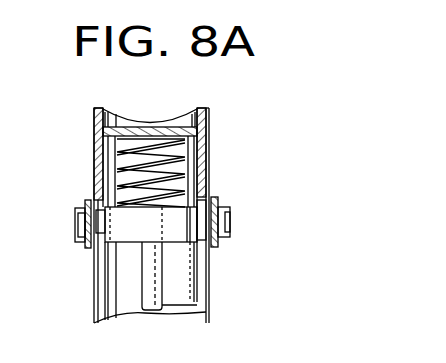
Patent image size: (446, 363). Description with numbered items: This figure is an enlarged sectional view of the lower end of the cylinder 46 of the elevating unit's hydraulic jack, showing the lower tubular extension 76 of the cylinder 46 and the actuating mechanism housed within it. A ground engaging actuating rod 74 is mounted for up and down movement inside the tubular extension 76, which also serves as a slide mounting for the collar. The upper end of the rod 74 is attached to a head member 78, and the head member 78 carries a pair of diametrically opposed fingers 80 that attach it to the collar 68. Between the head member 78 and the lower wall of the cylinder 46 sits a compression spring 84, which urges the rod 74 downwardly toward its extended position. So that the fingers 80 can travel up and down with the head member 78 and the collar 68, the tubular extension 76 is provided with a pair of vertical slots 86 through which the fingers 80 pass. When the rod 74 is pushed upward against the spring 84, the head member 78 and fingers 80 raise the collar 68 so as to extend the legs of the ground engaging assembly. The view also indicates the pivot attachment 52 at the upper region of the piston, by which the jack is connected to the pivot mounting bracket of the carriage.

The cylinder 46 is at (208, 112).
The pivot attachment 52 is at (148, 127).
The compression spring 84 is at (180, 163).
The head member 78 is at (120, 222).
The collar 68 is at (88, 205).
The fingers 80 is at (102, 217).
The vertical slots 86 is at (108, 265).
The lower tubular extension 76 is at (93, 305).
The ground engaging actuating rod 74 is at (197, 303).